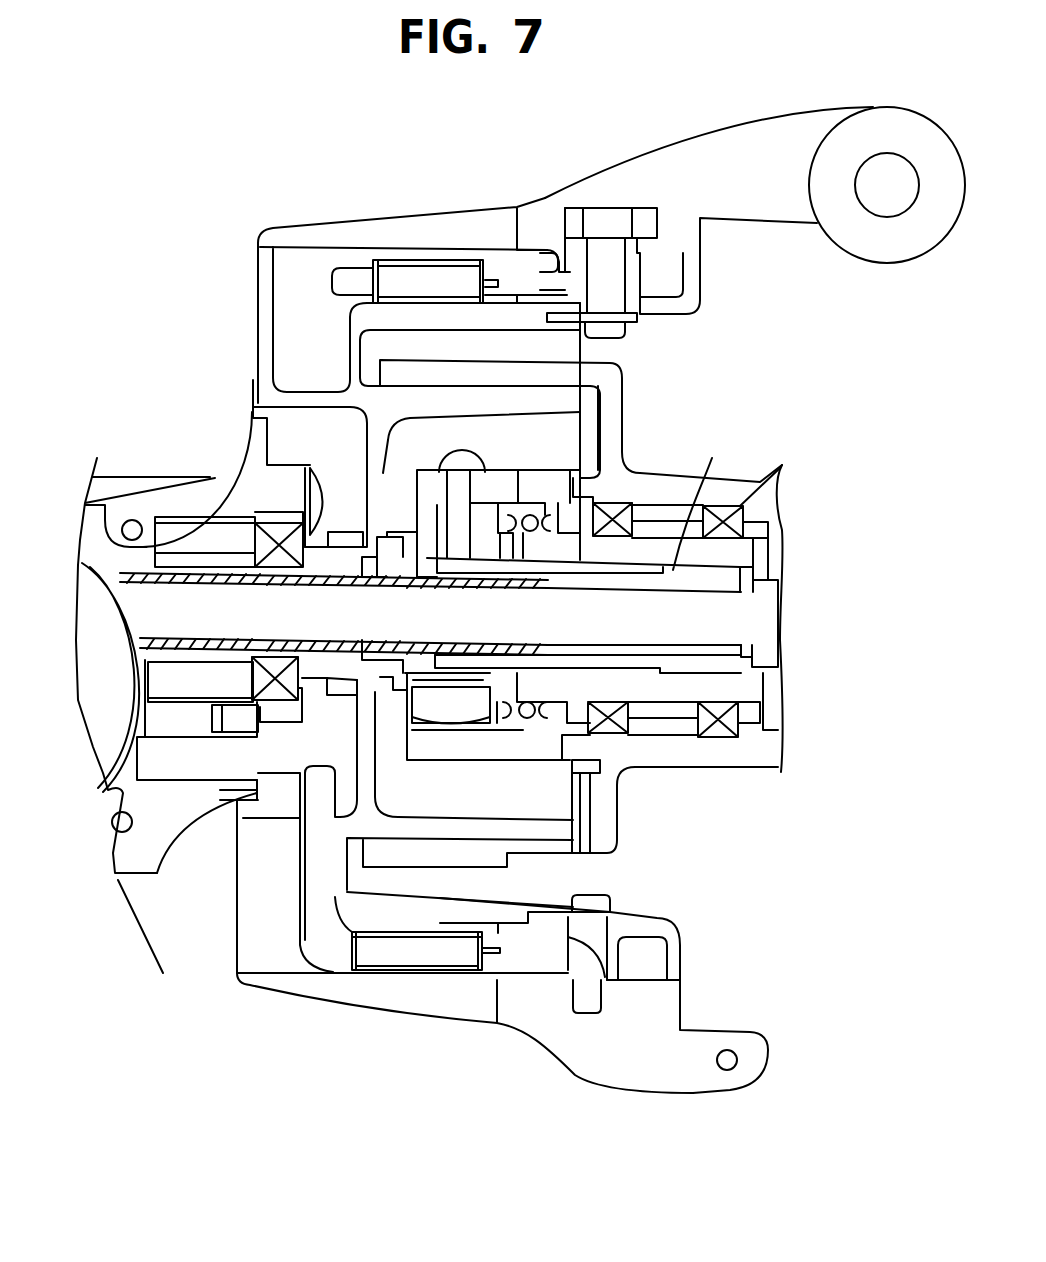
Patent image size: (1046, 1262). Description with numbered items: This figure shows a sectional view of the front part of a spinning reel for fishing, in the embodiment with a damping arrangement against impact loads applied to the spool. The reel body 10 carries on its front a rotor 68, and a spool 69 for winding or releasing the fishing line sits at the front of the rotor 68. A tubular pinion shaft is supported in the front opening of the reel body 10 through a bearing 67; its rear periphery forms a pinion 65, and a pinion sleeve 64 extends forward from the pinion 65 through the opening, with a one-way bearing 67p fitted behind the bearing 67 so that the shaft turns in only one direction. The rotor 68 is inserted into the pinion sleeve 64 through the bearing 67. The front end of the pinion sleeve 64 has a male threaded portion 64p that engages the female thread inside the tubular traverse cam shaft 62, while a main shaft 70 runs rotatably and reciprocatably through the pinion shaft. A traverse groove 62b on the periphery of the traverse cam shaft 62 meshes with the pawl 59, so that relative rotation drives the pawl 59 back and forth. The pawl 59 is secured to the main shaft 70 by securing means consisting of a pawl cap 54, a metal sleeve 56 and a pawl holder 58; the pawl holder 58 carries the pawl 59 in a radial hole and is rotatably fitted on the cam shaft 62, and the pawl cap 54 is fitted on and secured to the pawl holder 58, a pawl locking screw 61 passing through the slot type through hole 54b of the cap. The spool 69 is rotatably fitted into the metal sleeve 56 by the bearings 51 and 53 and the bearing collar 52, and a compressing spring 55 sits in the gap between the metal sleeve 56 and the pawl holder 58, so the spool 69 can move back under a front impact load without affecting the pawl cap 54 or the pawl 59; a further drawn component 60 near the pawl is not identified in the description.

The reel body 10 is at (203, 723).
The bearing 51 is at (790, 470).
The bearing collar 52 is at (707, 537).
The bearing 53 is at (600, 510).
The pawl cap 54 is at (553, 487).
The slot type through hole 54b is at (492, 513).
The compressing spring 55 is at (523, 503).
The metal sleeve 56 is at (738, 510).
The pawl holder 58 is at (488, 510).
The pawl 59 is at (445, 683).
The spring 60 is at (475, 717).
The pawl locking screw 61 is at (447, 463).
The tubular traverse cam shaft 62 is at (680, 573).
The traverse groove 62b is at (613, 668).
The pinion sleeve 64 is at (177, 573).
The male threaded portion 64p is at (423, 537).
The pinion 65 is at (138, 567).
The bearing 67 is at (220, 535).
The one-way bearing 67p is at (280, 525).
The rotor 68 is at (342, 553).
The spool 69 is at (614, 376).
The main shaft 70 is at (187, 622).